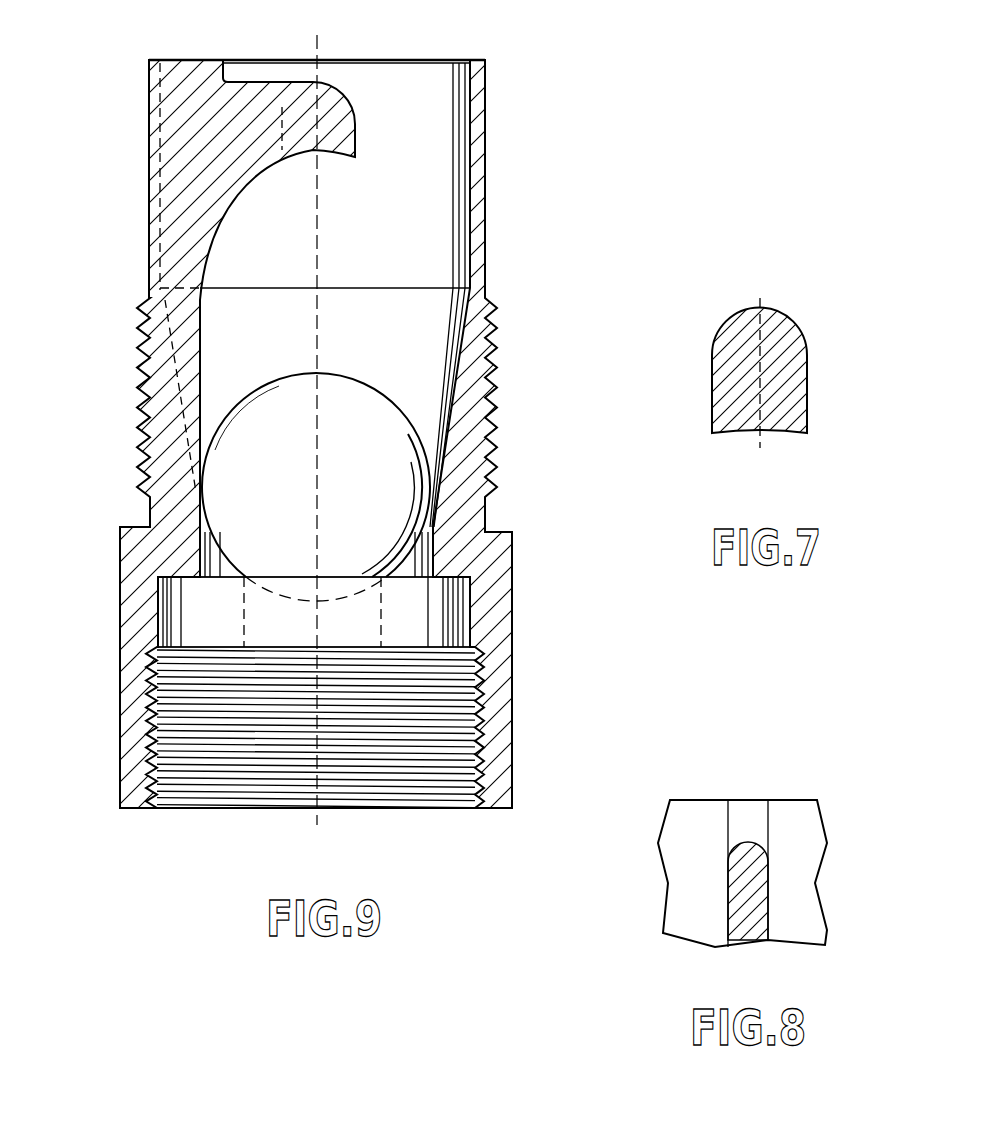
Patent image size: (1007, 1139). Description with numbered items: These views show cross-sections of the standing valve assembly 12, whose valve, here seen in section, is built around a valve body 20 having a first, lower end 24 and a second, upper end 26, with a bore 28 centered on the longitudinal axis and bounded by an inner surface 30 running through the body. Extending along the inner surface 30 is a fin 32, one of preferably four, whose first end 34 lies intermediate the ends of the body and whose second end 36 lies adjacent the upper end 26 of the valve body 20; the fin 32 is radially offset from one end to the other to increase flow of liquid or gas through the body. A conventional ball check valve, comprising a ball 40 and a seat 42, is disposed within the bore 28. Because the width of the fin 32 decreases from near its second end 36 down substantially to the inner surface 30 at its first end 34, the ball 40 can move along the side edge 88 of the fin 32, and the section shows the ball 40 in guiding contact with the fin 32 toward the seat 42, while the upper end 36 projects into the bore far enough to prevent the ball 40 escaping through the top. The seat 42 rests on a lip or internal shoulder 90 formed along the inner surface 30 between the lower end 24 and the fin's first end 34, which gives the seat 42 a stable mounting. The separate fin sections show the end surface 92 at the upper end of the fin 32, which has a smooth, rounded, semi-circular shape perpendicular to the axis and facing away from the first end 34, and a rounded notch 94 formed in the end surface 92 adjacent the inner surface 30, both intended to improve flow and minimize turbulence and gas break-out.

In FIG. 9, the standing valve assembly 12 is at (510, 206).
In FIG. 9, the valve body 20 is at (502, 552).
In FIG. 9, the first end 24 is at (130, 812).
In FIG. 9, the second end 26 is at (492, 97).
In FIG. 9, the bore 28 is at (401, 780).
In FIG. 9, the inner surface 30 is at (197, 556).
In FIG. 9, the fin 32 is at (178, 232).
In FIG. 7, the fin 32 is at (790, 408).
In FIG. 9, the first end 34 is at (190, 528).
In FIG. 9, the second end 36 is at (138, 70).
In FIG. 9, the ball 40 is at (378, 453).
In FIG. 9, the seat 42 is at (170, 606).
In FIG. 9, the side edge 88 is at (197, 315).
In FIG. 9, the internal shoulder 90 is at (166, 582).
In FIG. 7, the end surface 92 is at (762, 310).
In FIG. 8, the end surface 92 is at (750, 850).
In FIG. 8, the rounded notch 94 is at (742, 808).